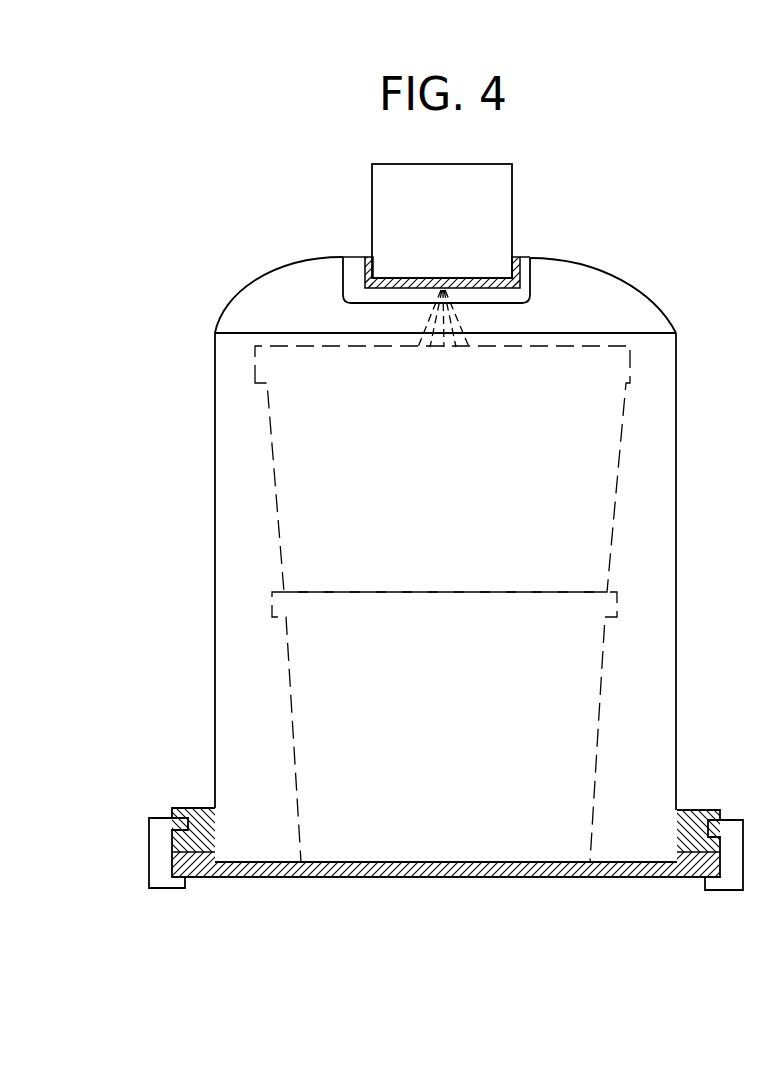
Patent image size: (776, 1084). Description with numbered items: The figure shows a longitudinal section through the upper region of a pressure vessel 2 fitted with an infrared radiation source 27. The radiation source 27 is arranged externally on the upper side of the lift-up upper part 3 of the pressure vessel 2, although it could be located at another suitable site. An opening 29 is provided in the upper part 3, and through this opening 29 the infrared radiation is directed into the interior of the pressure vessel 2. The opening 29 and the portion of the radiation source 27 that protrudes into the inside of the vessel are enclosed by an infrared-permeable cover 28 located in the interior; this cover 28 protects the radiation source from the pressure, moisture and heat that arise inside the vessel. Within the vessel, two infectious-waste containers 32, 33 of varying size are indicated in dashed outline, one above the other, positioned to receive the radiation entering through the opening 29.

The pressure vessel 2 is at (233, 732).
The lift-up upper part 3 is at (652, 576).
The infrared radiation source 27 is at (493, 187).
The infrared-permeable cover 28 is at (341, 262).
The opening 29 is at (447, 270).
The infectious-waste container 32 is at (603, 462).
The infectious-waste container 33 is at (582, 706).